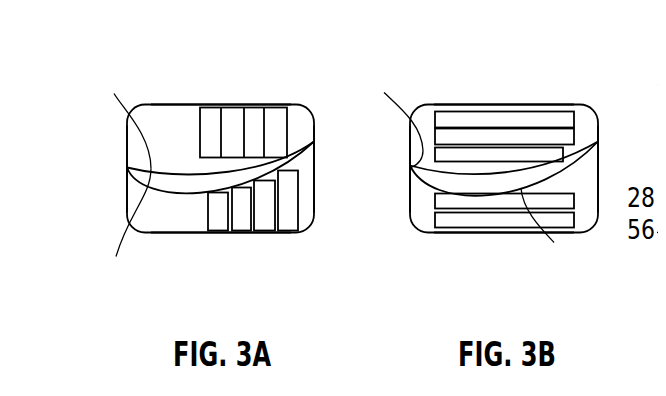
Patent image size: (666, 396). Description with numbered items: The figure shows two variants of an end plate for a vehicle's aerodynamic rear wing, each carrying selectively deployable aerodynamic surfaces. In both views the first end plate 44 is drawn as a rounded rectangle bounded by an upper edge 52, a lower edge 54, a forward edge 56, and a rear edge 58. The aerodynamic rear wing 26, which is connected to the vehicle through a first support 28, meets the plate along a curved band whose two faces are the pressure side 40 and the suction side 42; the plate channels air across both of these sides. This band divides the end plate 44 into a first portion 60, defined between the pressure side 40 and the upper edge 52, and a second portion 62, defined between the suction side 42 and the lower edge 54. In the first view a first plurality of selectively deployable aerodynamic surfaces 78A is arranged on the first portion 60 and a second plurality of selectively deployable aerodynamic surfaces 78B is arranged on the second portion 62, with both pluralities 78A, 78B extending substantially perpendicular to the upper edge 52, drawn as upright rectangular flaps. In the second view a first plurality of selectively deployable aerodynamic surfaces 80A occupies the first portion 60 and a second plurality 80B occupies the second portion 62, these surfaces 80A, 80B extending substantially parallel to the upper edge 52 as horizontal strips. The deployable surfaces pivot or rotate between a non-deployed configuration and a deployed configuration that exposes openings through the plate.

In FIG. 3A, the aerodynamic rear wing 26 is at (126, 167).
In FIG. 3B, the first support 28 is at (410, 167).
In FIG. 3A, the pressure side 40 is at (126, 117).
In FIG. 3B, the pressure side 40 is at (397, 117).
In FIG. 3A, the suction side 42 is at (127, 228).
In FIG. 3B, the suction side 42 is at (546, 238).
In FIG. 3A, the first end plate 44 is at (106, 128).
In FIG. 3A, the upper edge 52 is at (178, 103).
In FIG. 3B, the upper edge 52 is at (488, 103).
In FIG. 3A, the lower edge 54 is at (177, 233).
In FIG. 3B, the lower edge 54 is at (433, 234).
In FIG. 3A, the forward edge 56 is at (125, 205).
In FIG. 3B, the forward edge 56 is at (408, 211).
In FIG. 3A, the rear edge 58 is at (313, 180).
In FIG. 3B, the rear edge 58 is at (597, 178).
In FIG. 3A, the first portion 60 is at (210, 94).
In FIG. 3B, the first portion 60 is at (500, 95).
In FIG. 3A, the second portion 62 is at (247, 229).
In FIG. 3B, the second portion 62 is at (531, 236).
In FIG. 3A, the first plurality of selectively deployable aerodynamic surfaces 78A is at (253, 113).
In FIG. 3A, the second plurality of selectively deployable aerodynamic surfaces 78B is at (263, 217).
In FIG. 3B, the first plurality of selectively deployable aerodynamic surfaces 80A is at (535, 118).
In FIG. 3B, the second plurality of selectively deployable aerodynamic surfaces 80B is at (488, 220).